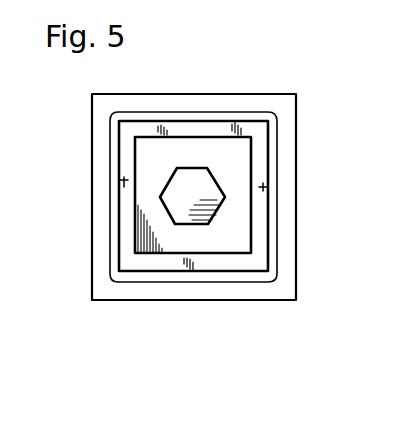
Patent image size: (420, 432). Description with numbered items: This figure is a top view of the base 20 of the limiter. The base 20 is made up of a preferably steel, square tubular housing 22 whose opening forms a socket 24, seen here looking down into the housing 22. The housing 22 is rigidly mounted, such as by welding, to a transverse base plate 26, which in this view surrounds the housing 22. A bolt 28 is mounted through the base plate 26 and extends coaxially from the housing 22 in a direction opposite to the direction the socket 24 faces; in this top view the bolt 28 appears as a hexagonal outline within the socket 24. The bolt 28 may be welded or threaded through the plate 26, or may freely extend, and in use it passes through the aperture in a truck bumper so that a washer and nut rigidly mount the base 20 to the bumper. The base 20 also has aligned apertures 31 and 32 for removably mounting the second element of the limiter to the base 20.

The base 20 is at (83, 262).
The square tubular housing 22 is at (257, 143).
The socket 24 is at (200, 158).
The base plate 26 is at (282, 287).
The bolt 28 is at (176, 212).
The aperture 31 is at (121, 183).
The aperture 32 is at (263, 186).